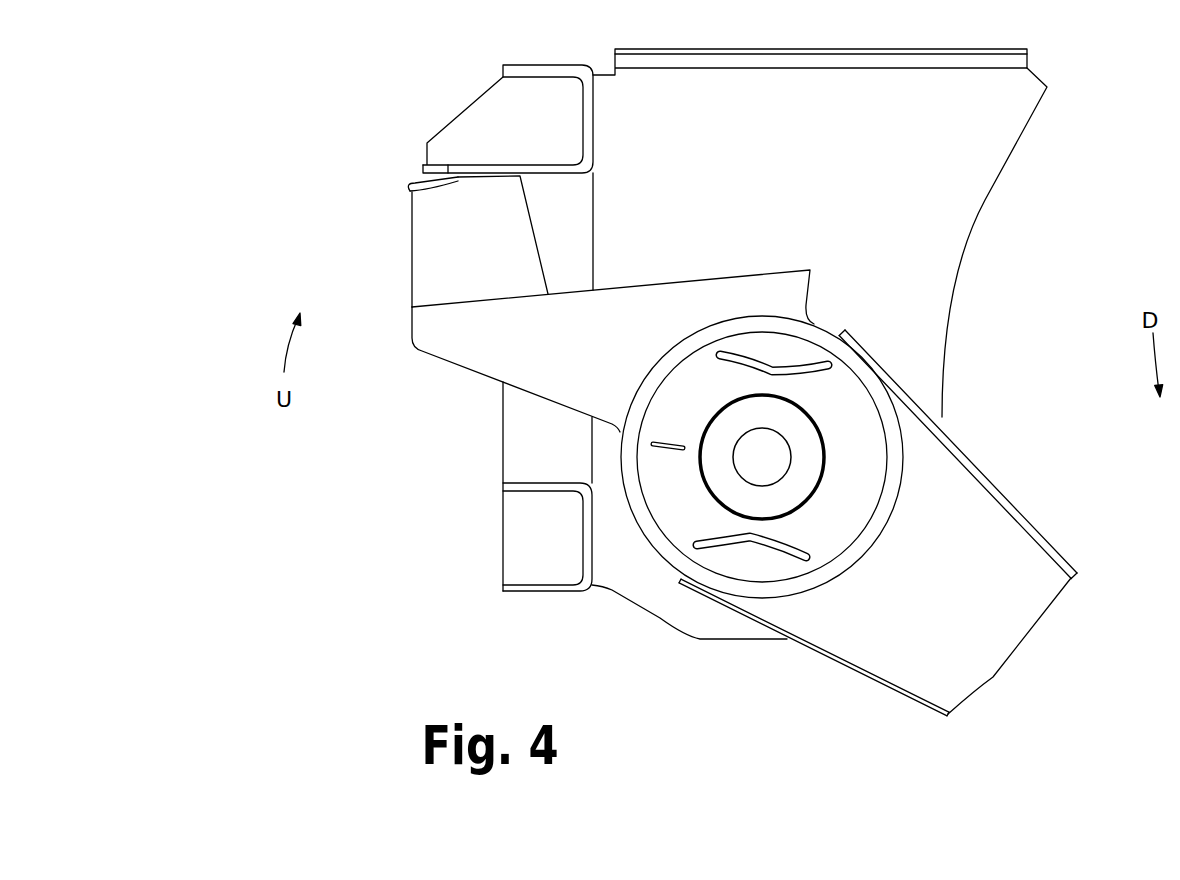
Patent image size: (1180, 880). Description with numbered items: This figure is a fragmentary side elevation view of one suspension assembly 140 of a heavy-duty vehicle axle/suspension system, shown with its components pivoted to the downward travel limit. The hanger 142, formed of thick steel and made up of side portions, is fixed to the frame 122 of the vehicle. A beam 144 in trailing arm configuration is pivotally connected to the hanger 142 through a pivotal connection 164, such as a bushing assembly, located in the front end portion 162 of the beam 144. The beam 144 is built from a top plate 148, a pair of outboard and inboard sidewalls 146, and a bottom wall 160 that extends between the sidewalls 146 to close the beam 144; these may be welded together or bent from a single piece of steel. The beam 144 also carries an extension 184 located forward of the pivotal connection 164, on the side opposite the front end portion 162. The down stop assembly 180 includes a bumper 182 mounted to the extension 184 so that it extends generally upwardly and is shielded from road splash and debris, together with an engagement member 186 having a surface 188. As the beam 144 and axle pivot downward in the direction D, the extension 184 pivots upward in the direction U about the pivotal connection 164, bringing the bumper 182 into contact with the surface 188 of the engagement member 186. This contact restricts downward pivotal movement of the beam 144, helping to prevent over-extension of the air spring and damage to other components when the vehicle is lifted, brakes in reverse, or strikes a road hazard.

The frame 122 is at (542, 593).
The suspension assembly 140 is at (953, 420).
The hanger 142 is at (835, 180).
The beam 144 is at (963, 594).
The outboard and inboard sidewalls 146 is at (1000, 643).
The top plate 148 is at (1003, 485).
The bottom wall 160 is at (902, 694).
The front end portion 162 is at (802, 625).
The pivotal connection 164 is at (722, 555).
The down stop assembly 180 is at (350, 189).
The bumper 182 is at (430, 238).
The extension 184 is at (478, 358).
The engagement member 186 is at (502, 118).
The surface 188 is at (408, 187).